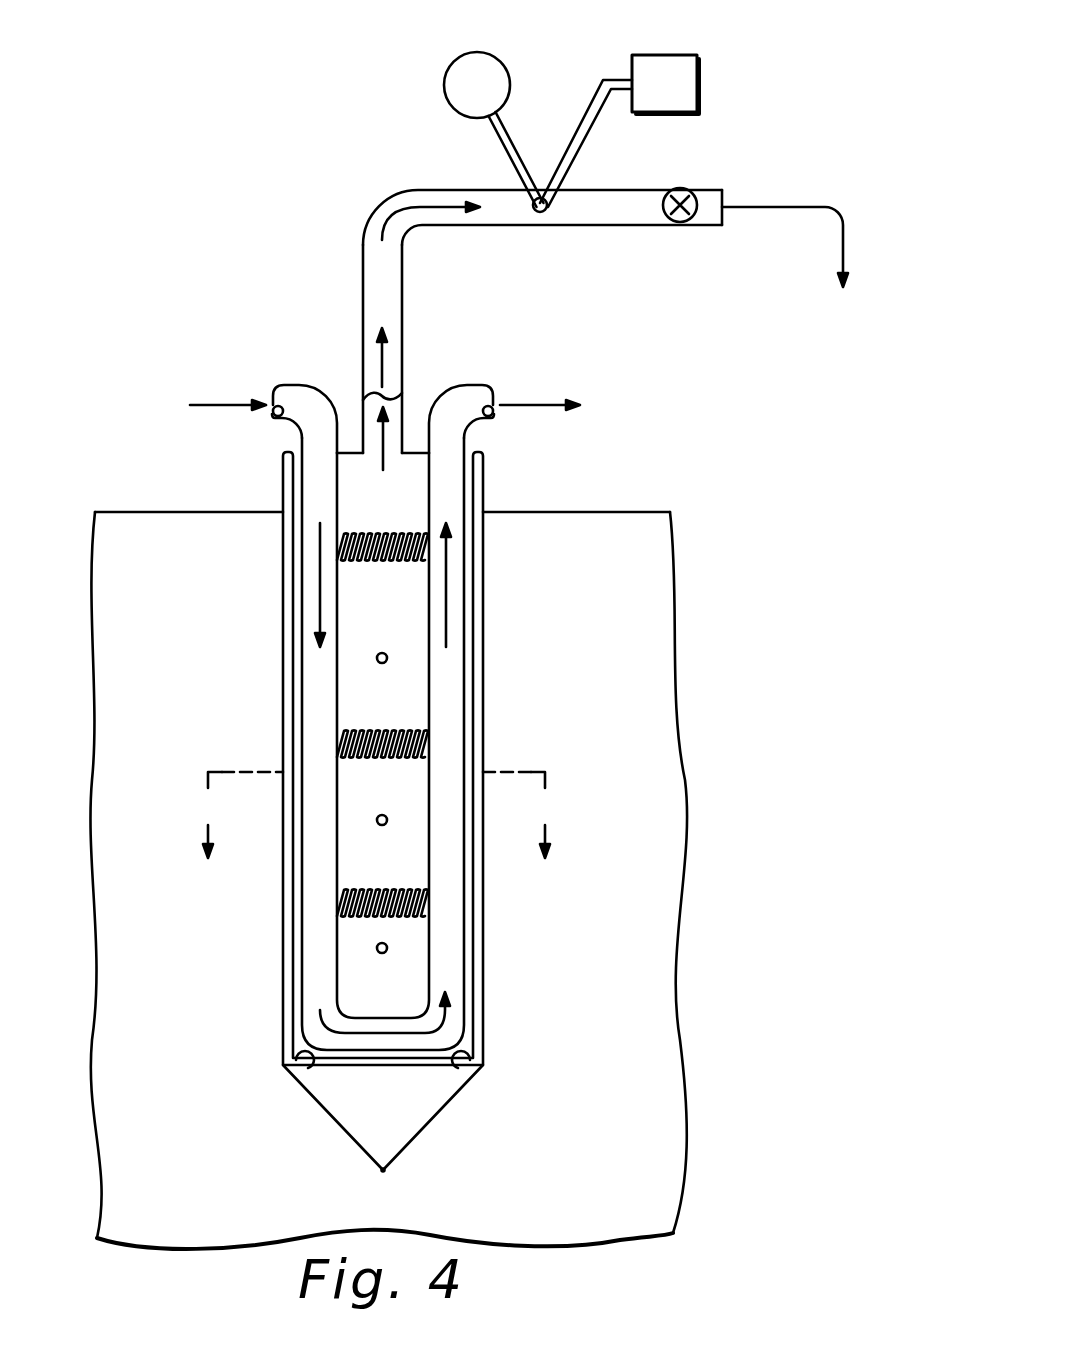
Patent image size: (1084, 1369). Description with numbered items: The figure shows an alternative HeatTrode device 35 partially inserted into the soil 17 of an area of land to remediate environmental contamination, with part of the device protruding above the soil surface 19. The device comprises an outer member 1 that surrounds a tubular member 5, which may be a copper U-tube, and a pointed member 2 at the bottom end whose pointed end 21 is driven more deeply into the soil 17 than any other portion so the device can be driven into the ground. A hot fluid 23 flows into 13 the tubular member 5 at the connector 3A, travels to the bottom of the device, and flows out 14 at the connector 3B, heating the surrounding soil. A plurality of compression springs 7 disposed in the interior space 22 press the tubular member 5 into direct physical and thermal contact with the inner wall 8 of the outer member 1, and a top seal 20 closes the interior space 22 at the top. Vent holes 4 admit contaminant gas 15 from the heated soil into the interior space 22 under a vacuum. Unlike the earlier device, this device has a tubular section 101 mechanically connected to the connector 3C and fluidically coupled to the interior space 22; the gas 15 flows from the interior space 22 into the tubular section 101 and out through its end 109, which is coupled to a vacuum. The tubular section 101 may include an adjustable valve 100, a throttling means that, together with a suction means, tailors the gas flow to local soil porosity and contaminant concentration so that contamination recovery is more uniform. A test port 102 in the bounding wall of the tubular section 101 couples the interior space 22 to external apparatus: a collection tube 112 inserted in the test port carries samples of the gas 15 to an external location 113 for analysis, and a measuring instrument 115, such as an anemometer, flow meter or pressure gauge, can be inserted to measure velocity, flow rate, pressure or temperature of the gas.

The HeatTrode device 35 is at (164, 204).
The tubular section 101 is at (450, 190).
The collection tube 112 is at (582, 115).
The measuring instrument 115 is at (460, 99).
The external location 113 is at (647, 98).
The adjustable valve 100 is at (680, 188).
The end 109 is at (723, 199).
The contaminant gas 15 is at (420, 227).
The test port 102 is at (546, 211).
The flow into tubular member 13 is at (230, 394).
The flow out of tubular member 14 is at (540, 394).
The connector 3A is at (270, 446).
The connector 3B is at (498, 446).
The connector 3C is at (346, 393).
The soil surface 19 is at (652, 512).
The top seal 20 is at (360, 453).
The springs 7 is at (423, 533).
The hot fluid 23 is at (318, 588).
The interior space 22 is at (380, 627).
The tubular member 5 is at (327, 725).
The vent holes 4 is at (378, 662).
The pointed member 2 is at (390, 1132).
The outer member 1 is at (283, 983).
The soil 17 is at (592, 1045).
The inner wall 8 is at (306, 1075).
The pointed end 21 is at (383, 1170).